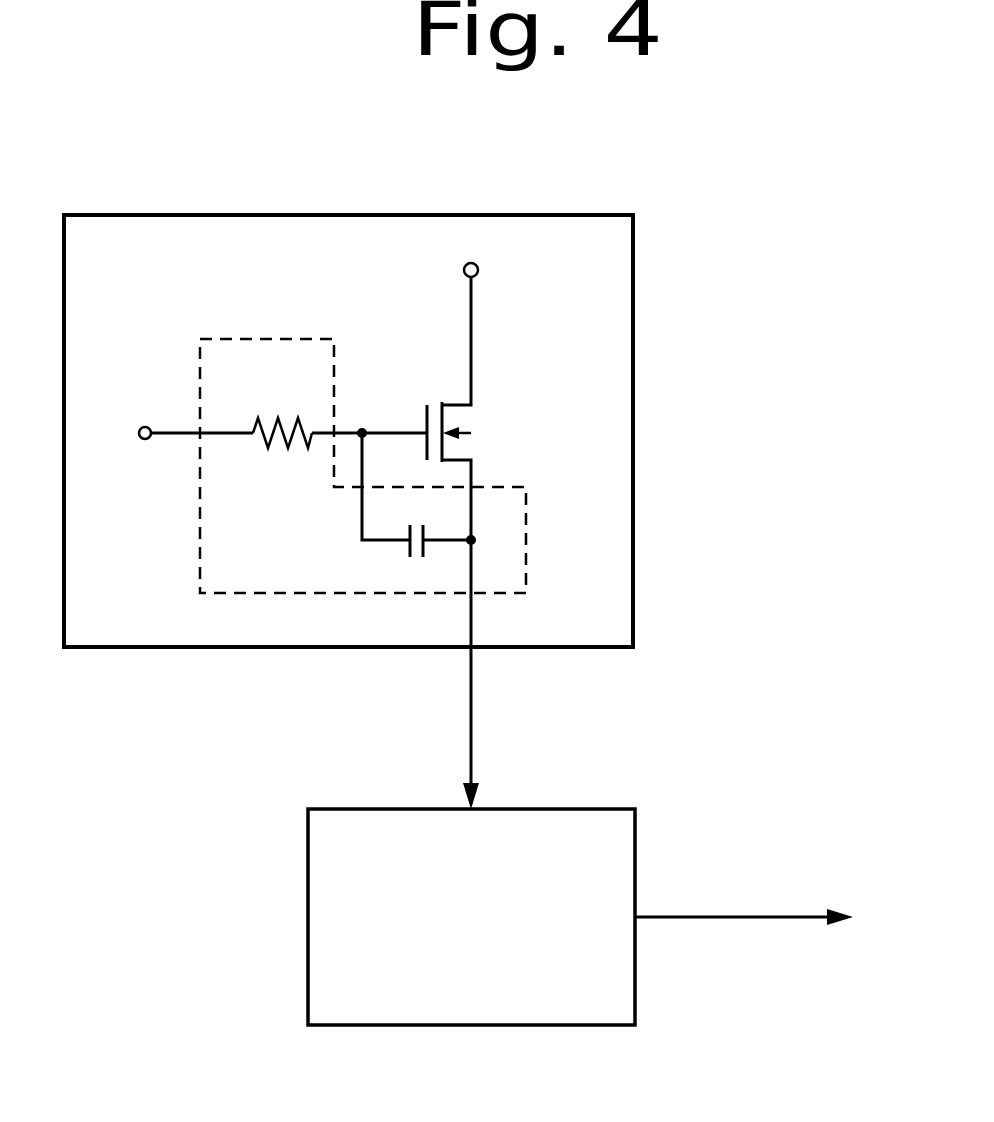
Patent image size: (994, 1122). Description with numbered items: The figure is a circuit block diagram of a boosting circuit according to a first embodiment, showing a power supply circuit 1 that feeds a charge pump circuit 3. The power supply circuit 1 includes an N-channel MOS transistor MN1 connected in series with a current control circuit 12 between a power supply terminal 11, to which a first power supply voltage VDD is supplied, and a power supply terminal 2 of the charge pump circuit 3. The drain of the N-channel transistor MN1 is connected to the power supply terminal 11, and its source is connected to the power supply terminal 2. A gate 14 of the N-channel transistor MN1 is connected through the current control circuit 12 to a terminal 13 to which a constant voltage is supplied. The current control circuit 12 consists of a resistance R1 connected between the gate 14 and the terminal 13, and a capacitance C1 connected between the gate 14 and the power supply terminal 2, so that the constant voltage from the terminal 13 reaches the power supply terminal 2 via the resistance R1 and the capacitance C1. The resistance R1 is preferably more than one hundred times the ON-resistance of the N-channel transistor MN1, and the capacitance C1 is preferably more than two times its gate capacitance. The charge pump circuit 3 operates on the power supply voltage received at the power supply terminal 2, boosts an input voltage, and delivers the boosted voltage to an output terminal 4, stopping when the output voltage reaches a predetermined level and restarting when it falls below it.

The power supply circuit 1 is at (635, 323).
The power supply terminal 2 is at (472, 700).
The charge pump circuit 3 is at (308, 917).
The output terminal 4 is at (743, 917).
The power supply terminal 11 is at (478, 270).
The current control circuit 12 is at (200, 540).
The terminal 13 is at (145, 427).
The gate 14 is at (362, 431).
The N-channel MOS transistor MN1 is at (465, 447).
The resistance R1 is at (290, 450).
The capacitance C1 is at (415, 558).